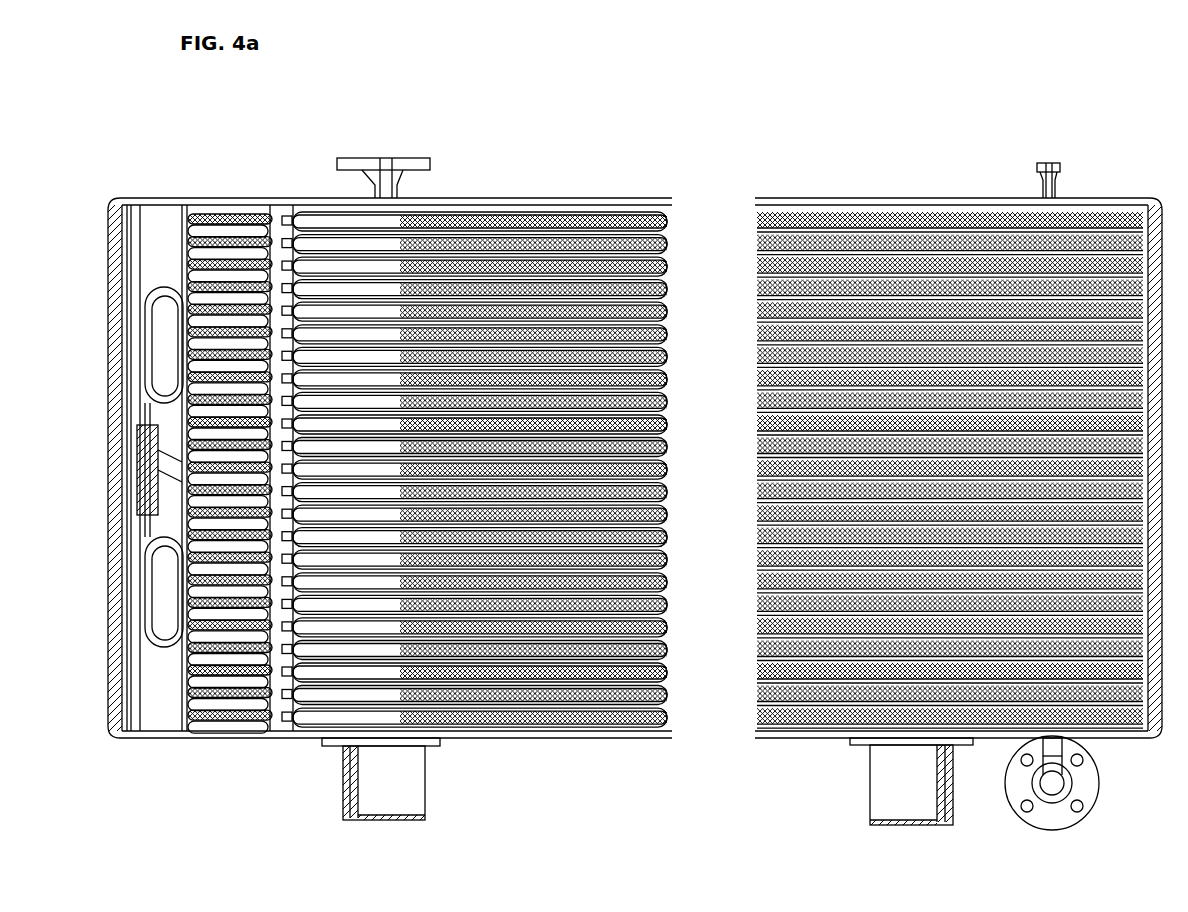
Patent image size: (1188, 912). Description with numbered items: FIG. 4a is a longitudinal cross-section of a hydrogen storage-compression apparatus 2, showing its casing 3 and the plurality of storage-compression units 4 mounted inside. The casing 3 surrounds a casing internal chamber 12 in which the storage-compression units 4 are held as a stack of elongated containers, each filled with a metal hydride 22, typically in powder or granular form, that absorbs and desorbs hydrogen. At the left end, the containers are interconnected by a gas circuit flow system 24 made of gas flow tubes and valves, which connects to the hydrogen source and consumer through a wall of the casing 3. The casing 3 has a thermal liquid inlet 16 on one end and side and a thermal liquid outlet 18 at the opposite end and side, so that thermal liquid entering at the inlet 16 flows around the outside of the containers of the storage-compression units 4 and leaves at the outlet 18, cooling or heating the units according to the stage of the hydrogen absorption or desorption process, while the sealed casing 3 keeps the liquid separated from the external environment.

The hydrogen storage-compression apparatus 2 is at (955, 98).
The casing 3 is at (858, 198).
The storage-compression units 4 is at (476, 210).
The casing internal chamber 12 is at (253, 215).
The thermal liquid inlet 16 is at (1053, 745).
The thermal liquid outlet 18 is at (383, 168).
The metal hydride 22 is at (578, 222).
The gas circuit flow system 24 is at (182, 257).